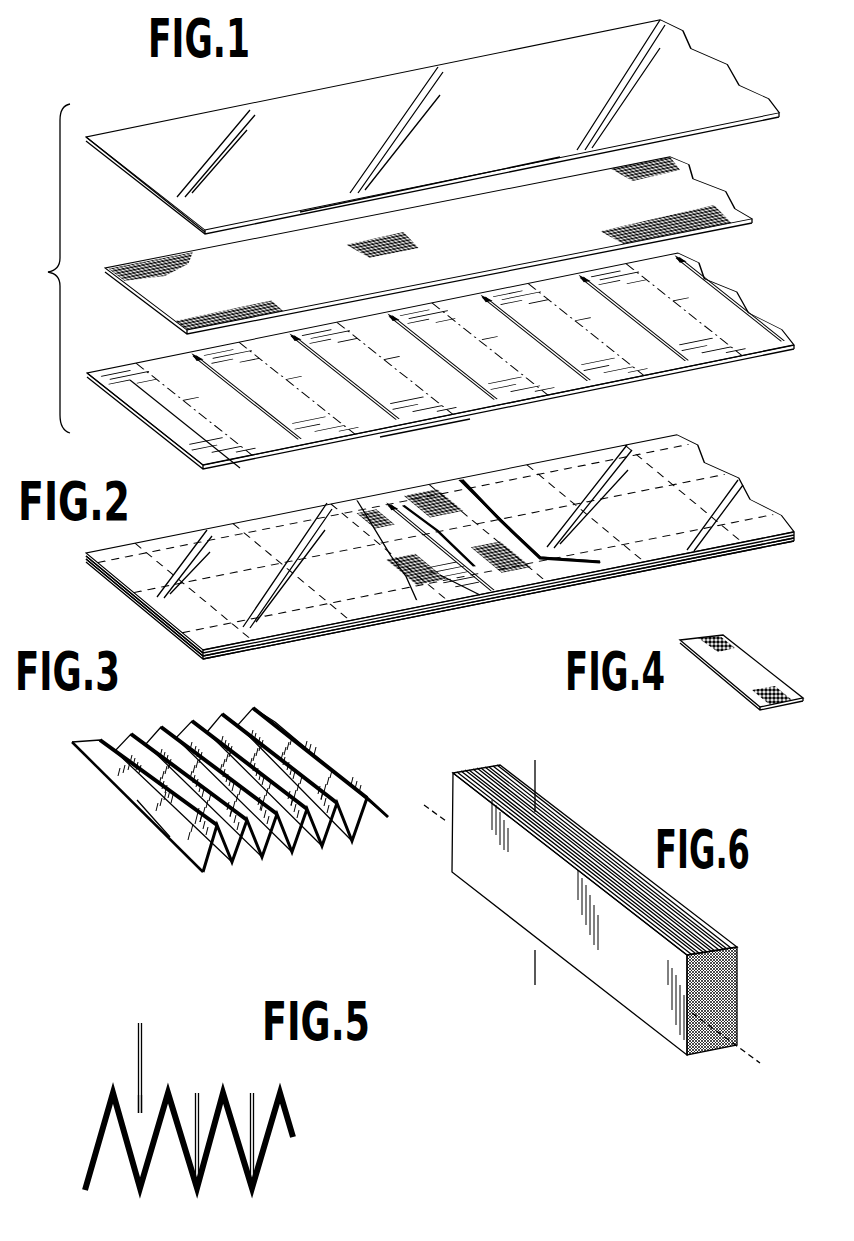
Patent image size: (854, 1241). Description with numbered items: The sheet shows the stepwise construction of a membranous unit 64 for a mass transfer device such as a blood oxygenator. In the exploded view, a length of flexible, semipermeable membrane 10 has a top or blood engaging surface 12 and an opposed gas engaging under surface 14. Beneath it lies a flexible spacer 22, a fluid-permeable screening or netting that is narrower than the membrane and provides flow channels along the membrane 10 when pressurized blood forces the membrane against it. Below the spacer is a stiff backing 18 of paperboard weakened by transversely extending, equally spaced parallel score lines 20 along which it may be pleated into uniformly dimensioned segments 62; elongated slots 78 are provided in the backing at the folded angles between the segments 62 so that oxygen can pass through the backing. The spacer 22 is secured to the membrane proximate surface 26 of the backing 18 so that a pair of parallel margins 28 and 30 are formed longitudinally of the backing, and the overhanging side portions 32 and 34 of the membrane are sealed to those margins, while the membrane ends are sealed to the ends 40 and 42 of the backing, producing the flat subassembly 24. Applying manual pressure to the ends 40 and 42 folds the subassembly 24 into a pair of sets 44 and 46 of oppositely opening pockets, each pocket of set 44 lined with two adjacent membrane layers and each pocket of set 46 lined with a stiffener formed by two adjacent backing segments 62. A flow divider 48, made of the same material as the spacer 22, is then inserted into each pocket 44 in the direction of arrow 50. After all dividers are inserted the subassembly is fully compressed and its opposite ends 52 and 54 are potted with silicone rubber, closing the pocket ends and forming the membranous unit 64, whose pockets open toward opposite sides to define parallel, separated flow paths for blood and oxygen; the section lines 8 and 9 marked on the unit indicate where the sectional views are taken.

In FIG. 6, the section line 8- 8 is at (431, 797).
In FIG. 6, the section line 9- 9 is at (552, 786).
In FIG. 1, the membrane 10 is at (700, 58).
In FIG. 2, the membrane 10 is at (258, 648).
In FIG. 1, the top or blood engaging surface 12 is at (468, 65).
In FIG. 1, the gas engaging under surface 14 is at (166, 200).
In FIG. 1, the stiff backing 18 is at (150, 437).
In FIG. 2, the stiff backing 18 is at (207, 655).
In FIG. 1, the score lines 20 is at (337, 444).
In FIG. 1, the flexible spacer 22 is at (700, 176).
In FIG. 2, the flexible spacer 22 is at (118, 586).
In FIG. 2, the subassembly 24 is at (714, 446).
In FIG. 1, the surface of backing 26 is at (128, 405).
In FIG. 1, the margin 28 is at (188, 354).
In FIG. 2, the margin 28 is at (405, 497).
In FIG. 1, the margin 30 is at (378, 440).
In FIG. 2, the margin 30 is at (463, 595).
In FIG. 1, the side portion of membrane 32 is at (325, 95).
In FIG. 1, the side portion of membrane 34 is at (444, 180).
In FIG. 2, the end of backing 40 is at (142, 592).
In FIG. 2, the end of backing 42 is at (742, 482).
In FIG. 3, the set of pockets 44 is at (277, 858).
In FIG. 5, the set of pockets 44 is at (238, 1103).
In FIG. 3, the set of pockets 46 is at (203, 720).
In FIG. 5, the set of pockets 46 is at (218, 1182).
In FIG. 4, the flow divider 48 is at (772, 707).
In FIG. 5, the flow divider 48 is at (136, 1030).
In FIG. 5, the arrow 50 is at (153, 1078).
In FIG. 6, the end of subassembly 52 is at (455, 770).
In FIG. 6, the end of subassembly 54 is at (740, 975).
In FIG. 1, the backing segments 62 is at (136, 433).
In FIG. 6, the membranous unit 64 is at (612, 975).
In FIG. 1, the elongated slots 78 is at (338, 375).
In FIG. 2, the elongated slots 78 is at (490, 578).
In FIG. 3, the elongated slots 78 is at (131, 736).